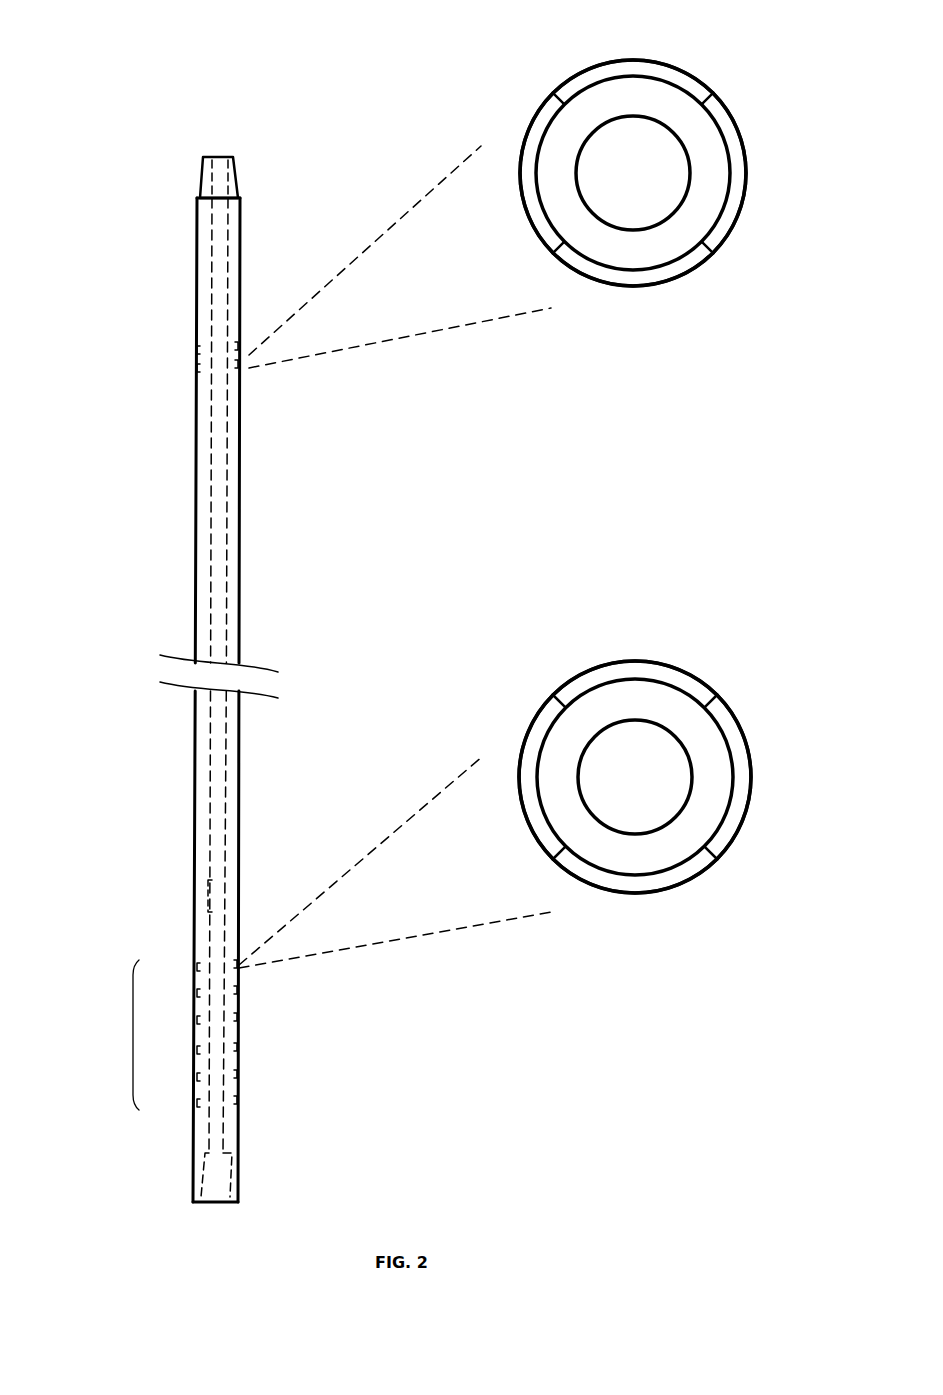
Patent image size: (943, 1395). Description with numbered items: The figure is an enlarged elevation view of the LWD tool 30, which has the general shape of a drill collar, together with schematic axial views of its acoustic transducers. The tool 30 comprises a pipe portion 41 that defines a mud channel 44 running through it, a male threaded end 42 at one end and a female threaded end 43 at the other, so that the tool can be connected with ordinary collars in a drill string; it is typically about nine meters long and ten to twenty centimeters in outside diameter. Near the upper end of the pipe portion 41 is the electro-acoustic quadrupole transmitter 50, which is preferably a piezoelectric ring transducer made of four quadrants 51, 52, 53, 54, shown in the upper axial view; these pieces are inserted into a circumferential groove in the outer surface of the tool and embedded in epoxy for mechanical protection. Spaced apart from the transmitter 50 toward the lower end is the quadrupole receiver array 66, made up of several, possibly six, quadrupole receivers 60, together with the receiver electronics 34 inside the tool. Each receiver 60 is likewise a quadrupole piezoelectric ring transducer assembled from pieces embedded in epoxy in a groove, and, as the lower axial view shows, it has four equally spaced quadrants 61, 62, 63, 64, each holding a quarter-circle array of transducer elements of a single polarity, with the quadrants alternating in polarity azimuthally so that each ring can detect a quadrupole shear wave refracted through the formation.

The LWD tool 30 is at (318, 144).
The receiver electronics 34 is at (207, 895).
The pipe portion 41 is at (197, 535).
The male threaded end 42 is at (203, 163).
The female threaded end 43 is at (193, 1163).
The mud channel 44 is at (219, 615).
The quadrupole transmitter 50 is at (198, 365).
The first quadrant of quadrupole transmitter 51 is at (667, 62).
The second quadrant of quadrupole transmitter 52 is at (740, 127).
The third quadrant of quadrupole transmitter 53 is at (660, 283).
The fourth quadrant of quadrupole transmitter 54 is at (535, 107).
The quadrupole receiver 60 is at (195, 990).
The first quadrant of quadrupole receiver 61 is at (670, 665).
The second quadrant of quadrupole receiver 62 is at (743, 730).
The third quadrant of quadrupole receiver 63 is at (660, 890).
The fourth quadrant of quadrupole receiver 64 is at (525, 748).
The quadrupole receiver array 66 is at (117, 1035).